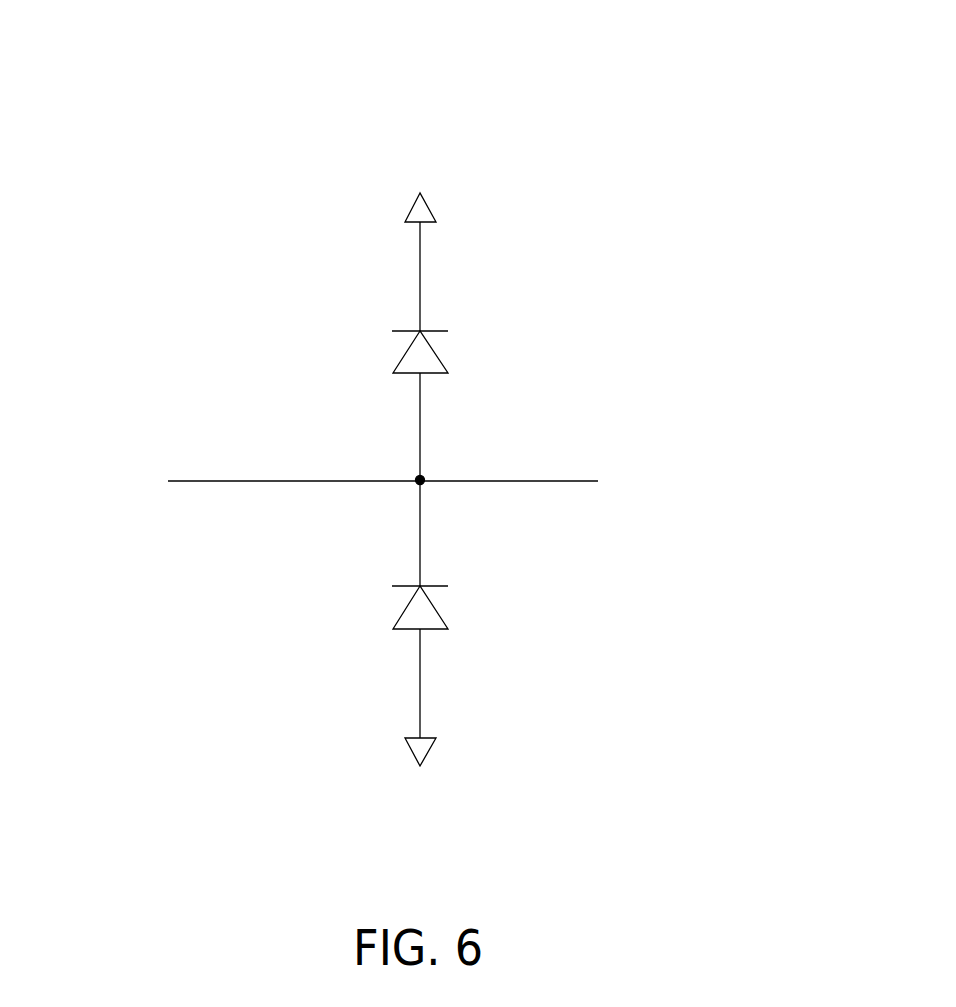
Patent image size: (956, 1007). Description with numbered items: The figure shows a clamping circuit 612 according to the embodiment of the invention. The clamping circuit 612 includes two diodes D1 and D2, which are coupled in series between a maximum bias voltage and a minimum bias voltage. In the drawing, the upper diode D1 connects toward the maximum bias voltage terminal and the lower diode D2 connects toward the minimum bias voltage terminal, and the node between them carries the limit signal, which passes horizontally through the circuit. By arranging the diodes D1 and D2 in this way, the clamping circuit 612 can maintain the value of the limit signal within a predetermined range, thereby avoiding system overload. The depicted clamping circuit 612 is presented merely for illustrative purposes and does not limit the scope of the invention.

The clamping circuit 612 is at (603, 133).
The diode D1 is at (445, 355).
The diode D2 is at (447, 612).